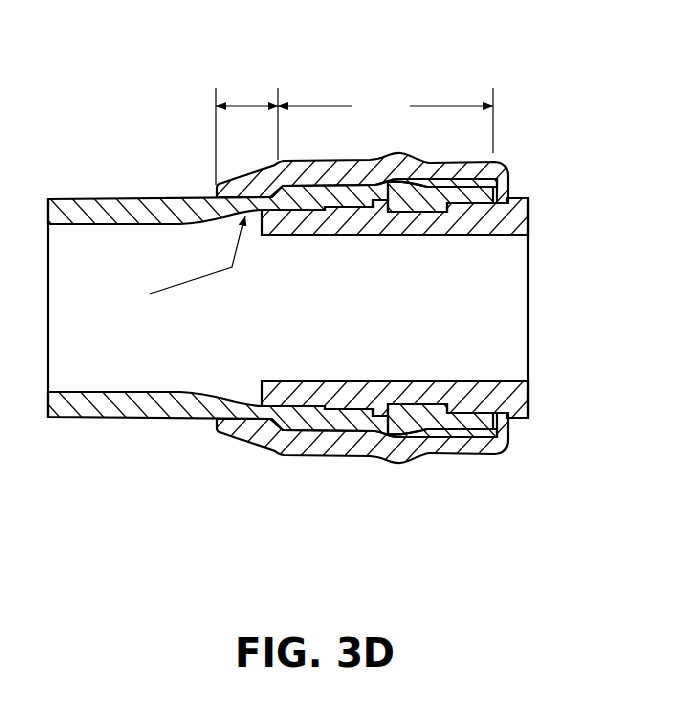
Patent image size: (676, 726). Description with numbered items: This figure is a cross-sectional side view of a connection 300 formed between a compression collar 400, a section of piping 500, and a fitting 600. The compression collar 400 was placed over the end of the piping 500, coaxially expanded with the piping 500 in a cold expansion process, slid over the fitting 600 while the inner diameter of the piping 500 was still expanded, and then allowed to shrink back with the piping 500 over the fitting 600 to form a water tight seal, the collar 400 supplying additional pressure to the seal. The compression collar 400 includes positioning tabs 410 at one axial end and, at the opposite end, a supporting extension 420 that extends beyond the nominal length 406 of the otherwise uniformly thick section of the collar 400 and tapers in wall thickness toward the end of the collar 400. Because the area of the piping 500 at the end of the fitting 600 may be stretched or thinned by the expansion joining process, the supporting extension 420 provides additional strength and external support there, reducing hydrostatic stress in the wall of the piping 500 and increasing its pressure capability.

The connection 300 is at (299, 280).
The compression collar 400 is at (293, 457).
The nominal length 406 is at (385, 120).
The positioning tabs 410 is at (512, 195).
The supporting extension 420 is at (248, 105).
The piping 500 is at (155, 418).
The fitting 600 is at (513, 400).